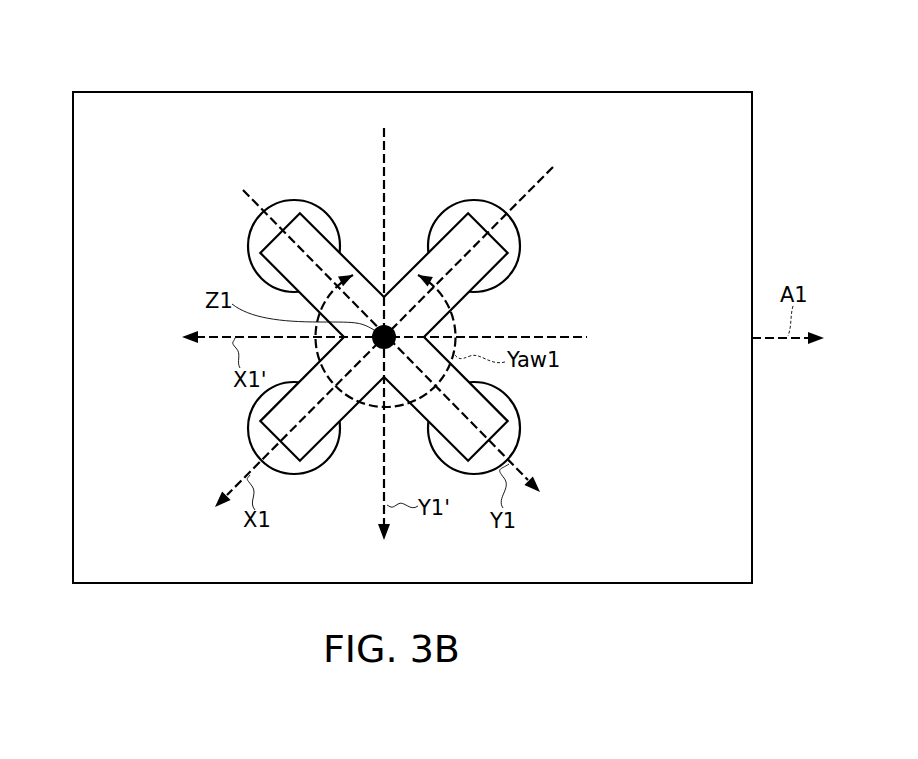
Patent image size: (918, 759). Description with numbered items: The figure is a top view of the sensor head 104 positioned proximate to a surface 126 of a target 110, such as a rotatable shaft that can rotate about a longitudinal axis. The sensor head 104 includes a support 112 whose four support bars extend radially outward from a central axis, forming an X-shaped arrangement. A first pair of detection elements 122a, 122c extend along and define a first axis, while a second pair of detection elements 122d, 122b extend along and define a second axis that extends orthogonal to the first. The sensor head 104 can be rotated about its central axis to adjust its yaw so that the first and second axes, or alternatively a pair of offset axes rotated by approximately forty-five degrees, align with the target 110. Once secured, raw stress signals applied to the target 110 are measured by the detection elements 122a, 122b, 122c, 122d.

The target 110 is at (647, 41).
The surface 126 is at (453, 92).
The sensor head 104 is at (542, 281).
The support 112 is at (428, 311).
The detection element 122a is at (463, 200).
The detection element 122b is at (521, 445).
The detection element 122c is at (248, 423).
The detection element 122d is at (258, 216).